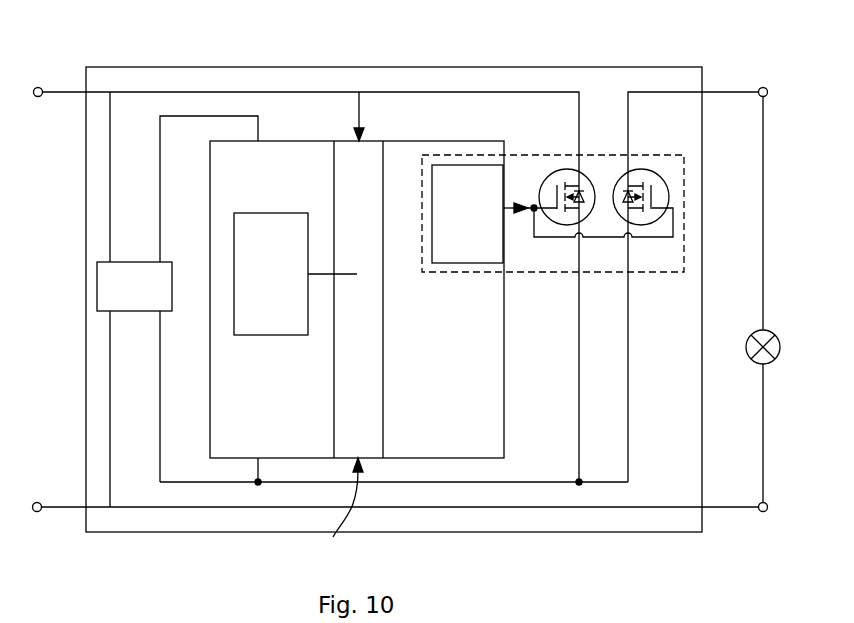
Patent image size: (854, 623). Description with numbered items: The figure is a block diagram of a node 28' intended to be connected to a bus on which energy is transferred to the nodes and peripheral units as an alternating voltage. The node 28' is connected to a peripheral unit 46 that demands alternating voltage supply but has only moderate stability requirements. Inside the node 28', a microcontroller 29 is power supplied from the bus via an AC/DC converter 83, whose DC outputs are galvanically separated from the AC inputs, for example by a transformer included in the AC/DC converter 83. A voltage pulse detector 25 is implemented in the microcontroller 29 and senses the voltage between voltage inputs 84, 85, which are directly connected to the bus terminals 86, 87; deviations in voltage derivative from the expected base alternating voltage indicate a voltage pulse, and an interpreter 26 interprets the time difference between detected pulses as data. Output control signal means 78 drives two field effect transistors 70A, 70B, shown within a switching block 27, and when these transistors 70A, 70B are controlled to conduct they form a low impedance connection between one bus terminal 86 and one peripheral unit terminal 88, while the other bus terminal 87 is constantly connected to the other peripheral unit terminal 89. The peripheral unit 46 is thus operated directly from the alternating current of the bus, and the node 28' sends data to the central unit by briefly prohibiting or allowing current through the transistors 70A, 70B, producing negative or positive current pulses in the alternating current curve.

The voltage pulse detector 25 is at (342, 412).
The interpreter 26 is at (262, 336).
The switching circuit 27 is at (447, 274).
The node 28' is at (367, 299).
The microcontroller 29 is at (235, 432).
The peripheral unit 46 is at (752, 334).
The transistor 70A is at (558, 176).
The transistor 70B is at (646, 172).
The output control signal means 78 is at (493, 245).
The AC/DC converter 83 is at (147, 303).
The voltage input 84 is at (357, 113).
The voltage input 85 is at (337, 512).
The bus terminal 86 is at (40, 88).
The bus terminal 87 is at (38, 512).
The peripheral unit terminal 88 is at (765, 88).
The peripheral unit terminal 89 is at (765, 512).